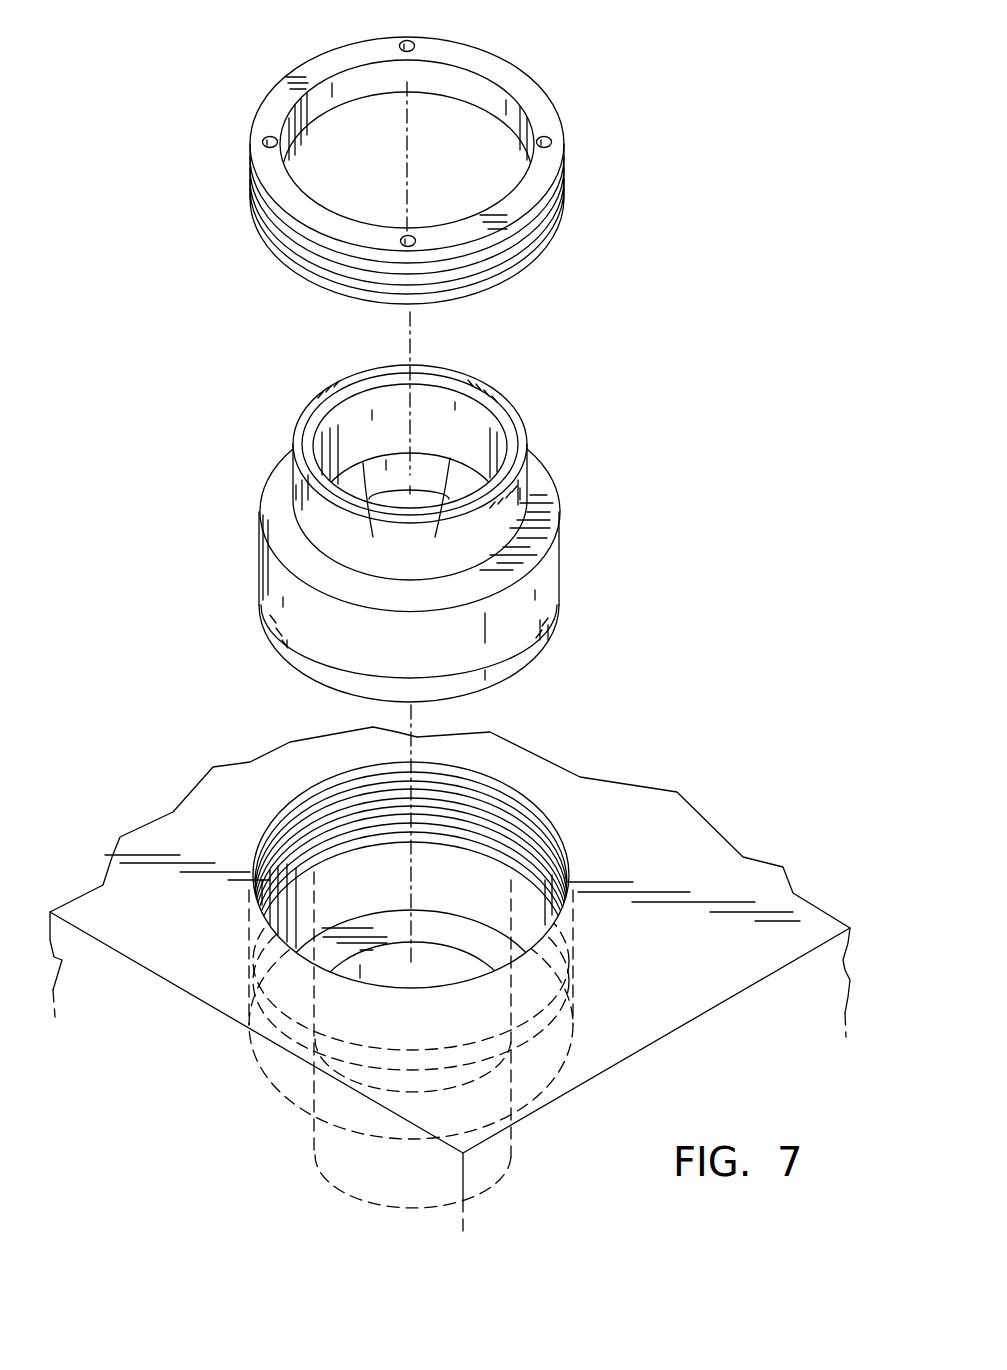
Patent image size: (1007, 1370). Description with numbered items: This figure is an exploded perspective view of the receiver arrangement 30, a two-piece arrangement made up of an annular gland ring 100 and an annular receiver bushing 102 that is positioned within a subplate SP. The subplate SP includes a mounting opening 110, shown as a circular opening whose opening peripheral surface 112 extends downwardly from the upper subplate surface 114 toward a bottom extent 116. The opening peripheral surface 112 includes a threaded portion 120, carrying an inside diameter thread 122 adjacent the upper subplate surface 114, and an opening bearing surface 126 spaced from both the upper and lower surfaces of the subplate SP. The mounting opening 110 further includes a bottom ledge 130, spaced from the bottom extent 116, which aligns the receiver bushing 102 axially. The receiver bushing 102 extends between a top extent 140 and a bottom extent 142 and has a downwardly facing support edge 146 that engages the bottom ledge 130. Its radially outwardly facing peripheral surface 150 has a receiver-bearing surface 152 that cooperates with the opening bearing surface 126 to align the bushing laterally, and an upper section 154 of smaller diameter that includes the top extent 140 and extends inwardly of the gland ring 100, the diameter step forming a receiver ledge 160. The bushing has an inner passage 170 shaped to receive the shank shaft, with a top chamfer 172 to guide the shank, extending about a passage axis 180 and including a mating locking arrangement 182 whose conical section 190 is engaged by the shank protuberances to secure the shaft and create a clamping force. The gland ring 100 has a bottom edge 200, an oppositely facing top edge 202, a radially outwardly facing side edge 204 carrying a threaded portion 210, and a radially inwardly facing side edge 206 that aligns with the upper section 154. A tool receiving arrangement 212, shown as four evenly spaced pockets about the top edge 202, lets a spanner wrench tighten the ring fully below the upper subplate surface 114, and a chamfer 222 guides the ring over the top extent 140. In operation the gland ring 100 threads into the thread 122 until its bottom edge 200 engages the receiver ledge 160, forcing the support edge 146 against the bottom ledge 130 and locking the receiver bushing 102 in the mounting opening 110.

The receiver arrangement 30 is at (706, 162).
The annular gland ring 100 is at (546, 78).
The receiver bushing 102 is at (545, 432).
The mounting opening 110 is at (522, 782).
The opening peripheral surface 112 is at (517, 903).
The upper subplate surface 114 is at (164, 838).
The bottom extent 116 is at (492, 1168).
The threaded portion 120 is at (332, 797).
The inside diameter thread 122 is at (485, 780).
The opening bearing surface 126 is at (287, 933).
The bottom ledge 130 is at (498, 948).
The top extent 140 is at (492, 396).
The bottom extent 142 is at (521, 668).
The support edge 146 is at (303, 672).
The peripheral surface 150 is at (252, 532).
The receiver-bearing surface 152 is at (541, 581).
The upper section 154 is at (508, 510).
The receiver ledge 160 is at (273, 483).
The inner passage 170 is at (433, 413).
The top chamfer 172 is at (352, 385).
The passage axis 180 is at (405, 332).
The mating locking arrangement 182 is at (410, 512).
The conical section 190 is at (410, 515).
The bottom edge 200 is at (527, 268).
The top edge 202 is at (312, 72).
The radially outwardly facing side edge 204 is at (562, 219).
The radially inwardly facing side edge 206 is at (307, 115).
The threaded portion 210 is at (297, 250).
The tool receiving arrangement 212 is at (405, 42).
The chamfer 222 is at (450, 100).
The subplate SP is at (807, 910).